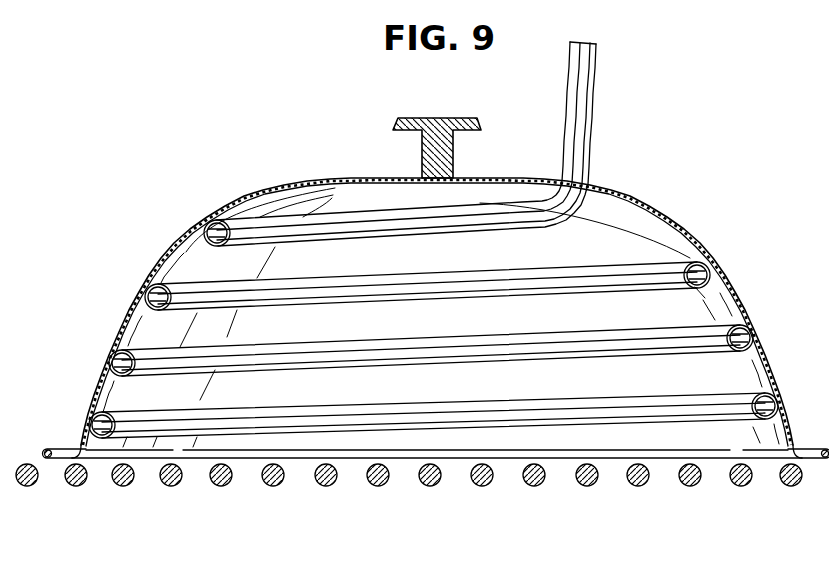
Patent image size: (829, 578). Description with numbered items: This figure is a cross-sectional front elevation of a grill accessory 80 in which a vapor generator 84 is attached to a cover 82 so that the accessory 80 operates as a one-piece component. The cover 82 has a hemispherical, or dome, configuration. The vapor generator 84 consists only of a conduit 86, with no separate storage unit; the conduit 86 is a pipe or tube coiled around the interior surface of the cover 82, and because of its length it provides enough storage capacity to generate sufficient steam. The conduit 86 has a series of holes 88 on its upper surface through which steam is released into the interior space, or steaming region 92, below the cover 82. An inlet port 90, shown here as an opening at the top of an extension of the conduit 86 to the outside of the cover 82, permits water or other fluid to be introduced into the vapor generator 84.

The grill accessory 80 is at (422, 309).
The cover 82 is at (253, 197).
The vapor generator 84 is at (418, 240).
The conduit 86 is at (100, 415).
The holes 88 is at (200, 278).
The inlet port 90 is at (599, 45).
The steaming region 92 is at (377, 438).